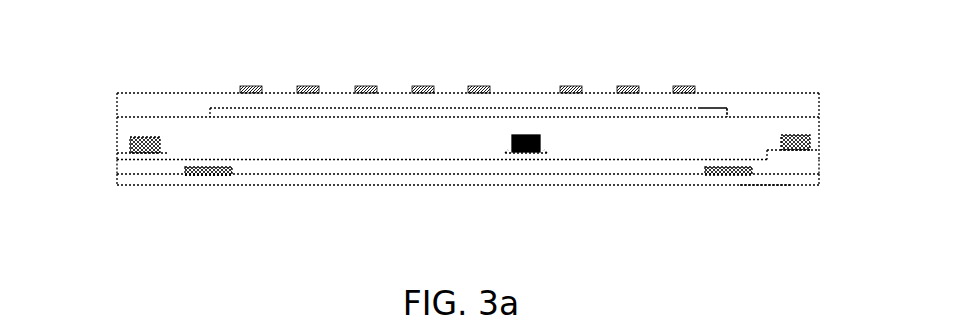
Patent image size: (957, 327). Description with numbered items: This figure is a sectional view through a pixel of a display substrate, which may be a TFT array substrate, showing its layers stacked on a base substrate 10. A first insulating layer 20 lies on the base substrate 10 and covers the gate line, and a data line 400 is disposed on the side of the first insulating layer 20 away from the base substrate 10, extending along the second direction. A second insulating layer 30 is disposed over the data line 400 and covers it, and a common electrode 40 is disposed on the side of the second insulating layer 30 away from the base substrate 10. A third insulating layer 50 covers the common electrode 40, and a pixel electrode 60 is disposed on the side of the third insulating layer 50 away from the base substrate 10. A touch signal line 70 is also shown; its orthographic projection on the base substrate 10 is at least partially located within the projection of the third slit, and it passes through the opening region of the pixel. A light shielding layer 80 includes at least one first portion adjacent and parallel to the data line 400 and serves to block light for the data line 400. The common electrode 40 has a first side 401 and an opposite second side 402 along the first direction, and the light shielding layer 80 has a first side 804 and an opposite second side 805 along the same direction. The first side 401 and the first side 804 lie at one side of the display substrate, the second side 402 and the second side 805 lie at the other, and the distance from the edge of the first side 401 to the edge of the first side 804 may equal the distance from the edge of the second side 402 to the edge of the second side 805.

The base substrate 10 is at (117, 182).
The first insulating layer 20 is at (117, 164).
The second insulating layer 30 is at (183, 115).
The common electrode 40 is at (232, 107).
The first side of the common electrode 401 is at (193, 132).
The second side of the common electrode 402 is at (727, 113).
The third insulating layer 50 is at (782, 107).
The pixel electrode 60 is at (367, 82).
The touch signal line 70 is at (522, 132).
The data line 400 is at (127, 145).
The light shielding layer 80 is at (217, 175).
The first side of the light shielding layer 804 is at (187, 177).
The second side of the light shielding layer 805 is at (765, 188).